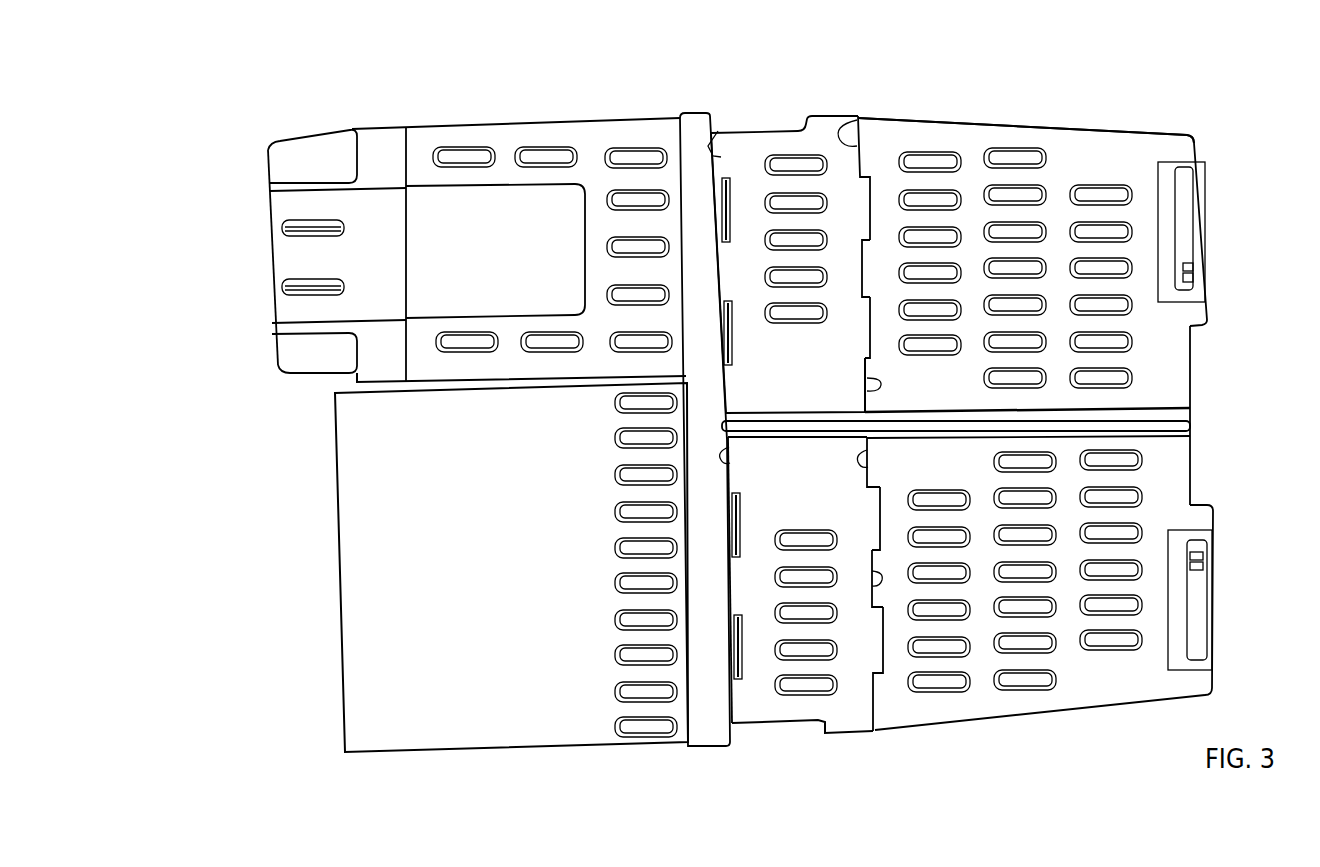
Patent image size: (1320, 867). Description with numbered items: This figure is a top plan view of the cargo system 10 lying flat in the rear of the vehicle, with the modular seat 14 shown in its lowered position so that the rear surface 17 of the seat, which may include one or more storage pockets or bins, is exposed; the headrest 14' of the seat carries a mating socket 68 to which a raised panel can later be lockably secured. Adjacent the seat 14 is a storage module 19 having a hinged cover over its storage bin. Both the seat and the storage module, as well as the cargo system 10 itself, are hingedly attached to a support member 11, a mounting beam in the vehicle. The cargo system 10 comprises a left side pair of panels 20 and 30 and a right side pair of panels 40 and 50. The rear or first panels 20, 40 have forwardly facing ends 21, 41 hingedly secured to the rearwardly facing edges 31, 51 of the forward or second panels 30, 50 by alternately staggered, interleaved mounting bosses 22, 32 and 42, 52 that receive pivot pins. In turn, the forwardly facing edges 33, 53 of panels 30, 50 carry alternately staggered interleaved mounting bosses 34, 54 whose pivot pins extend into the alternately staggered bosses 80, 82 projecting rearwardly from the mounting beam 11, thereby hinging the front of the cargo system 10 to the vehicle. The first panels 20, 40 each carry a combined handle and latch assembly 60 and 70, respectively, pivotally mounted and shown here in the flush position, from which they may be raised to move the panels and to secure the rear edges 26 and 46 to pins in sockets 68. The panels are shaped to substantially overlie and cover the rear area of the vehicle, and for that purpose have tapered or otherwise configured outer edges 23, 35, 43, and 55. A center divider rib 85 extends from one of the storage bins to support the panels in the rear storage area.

The cargo system 10 is at (1074, 79).
The support member 11 is at (690, 110).
The modular seat 14 is at (478, 220).
The headrest 14' is at (265, 251).
The rear surface 17 is at (521, 260).
The storage module 19 is at (533, 756).
The first panel 20 is at (979, 735).
The forwardly facing end 21 is at (876, 455).
The mounting bosses 22 is at (877, 441).
The outer edge 23 is at (1078, 710).
The rear edge 26 is at (1190, 463).
The second panel 30 is at (861, 742).
The rearwardly facing edge 31 is at (870, 593).
The mounting bosses 32 is at (875, 514).
The forwardly facing edge 33 is at (735, 464).
The mounting bosses 34 is at (735, 580).
The outer edge 35 is at (803, 722).
The first panel 40 is at (938, 114).
The forwardly facing end 41 is at (852, 121).
The mounting bosses 42 is at (862, 258).
The outer edge 43 is at (1117, 130).
The rear edge 46 is at (1190, 353).
The second panel 50 is at (838, 102).
The rearwardly facing edge 51 is at (866, 390).
The mounting bosses 52 is at (870, 330).
The forwardly facing edge 53 is at (717, 134).
The mounting bosses 54 is at (727, 272).
The outer edge 55 is at (770, 130).
The combined handle and latch assembly 60 is at (1220, 588).
The sockets 68 is at (293, 288).
The combined handle and latch assembly 70 is at (1212, 215).
The bosses 80 is at (738, 518).
The bosses 82 is at (732, 214).
The center divider rib 85 is at (1184, 415).